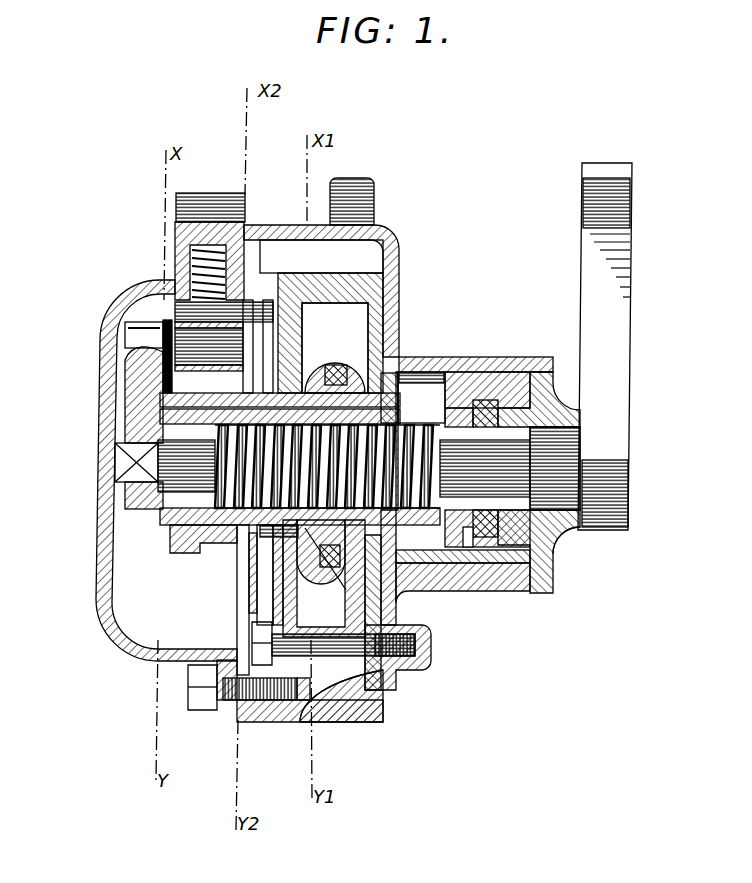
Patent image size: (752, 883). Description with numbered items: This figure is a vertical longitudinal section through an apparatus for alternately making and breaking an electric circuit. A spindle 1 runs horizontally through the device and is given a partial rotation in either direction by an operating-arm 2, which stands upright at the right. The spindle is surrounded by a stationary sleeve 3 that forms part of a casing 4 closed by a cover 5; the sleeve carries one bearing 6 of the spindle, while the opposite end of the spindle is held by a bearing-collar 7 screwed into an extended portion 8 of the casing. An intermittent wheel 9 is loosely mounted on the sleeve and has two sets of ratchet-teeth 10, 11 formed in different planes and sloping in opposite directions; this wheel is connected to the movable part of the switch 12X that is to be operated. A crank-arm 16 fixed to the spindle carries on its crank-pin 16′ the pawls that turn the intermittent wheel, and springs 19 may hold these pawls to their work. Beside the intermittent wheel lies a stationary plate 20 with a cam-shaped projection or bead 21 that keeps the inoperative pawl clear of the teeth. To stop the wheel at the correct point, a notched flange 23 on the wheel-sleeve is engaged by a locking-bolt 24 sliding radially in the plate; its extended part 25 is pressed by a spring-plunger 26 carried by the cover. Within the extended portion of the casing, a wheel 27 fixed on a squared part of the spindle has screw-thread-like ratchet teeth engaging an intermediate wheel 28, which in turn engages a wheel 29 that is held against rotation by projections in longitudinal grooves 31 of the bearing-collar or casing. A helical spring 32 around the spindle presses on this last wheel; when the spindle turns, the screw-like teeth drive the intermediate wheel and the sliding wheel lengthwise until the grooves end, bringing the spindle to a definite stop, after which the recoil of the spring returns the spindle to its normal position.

The spindle 1 is at (158, 462).
The operating-arm 2 is at (605, 346).
The stationary sleeve 3 is at (400, 395).
The casing 4 is at (390, 245).
The cover 5 is at (102, 345).
The bearing 6 is at (162, 520).
The bearing-collar 7 is at (548, 392).
The extended portion of the casing 8 is at (462, 372).
The intermittent wheel 9 is at (324, 566).
The ratchet-teeth 10 is at (160, 405).
The ratchet-teeth 11 is at (338, 360).
The movable part of the switch 12X is at (398, 345).
The crank-arm 16 is at (135, 366).
The crank-pin 16′ is at (190, 328).
The springs 19 is at (180, 388).
The stationary plate 20 is at (290, 270).
The cam-shaped projection or bead 21 is at (292, 606).
The notched flange 23 is at (268, 568).
The locking-bolt 24 is at (295, 342).
The extended part 25 is at (255, 312).
The spring-plunger 26 is at (178, 246).
The wheel 27 is at (556, 553).
The intermediate wheel 28 is at (495, 548).
The wheel 29 is at (455, 562).
The longitudinal grooves 31 is at (415, 378).
The helical spring 32 is at (412, 432).